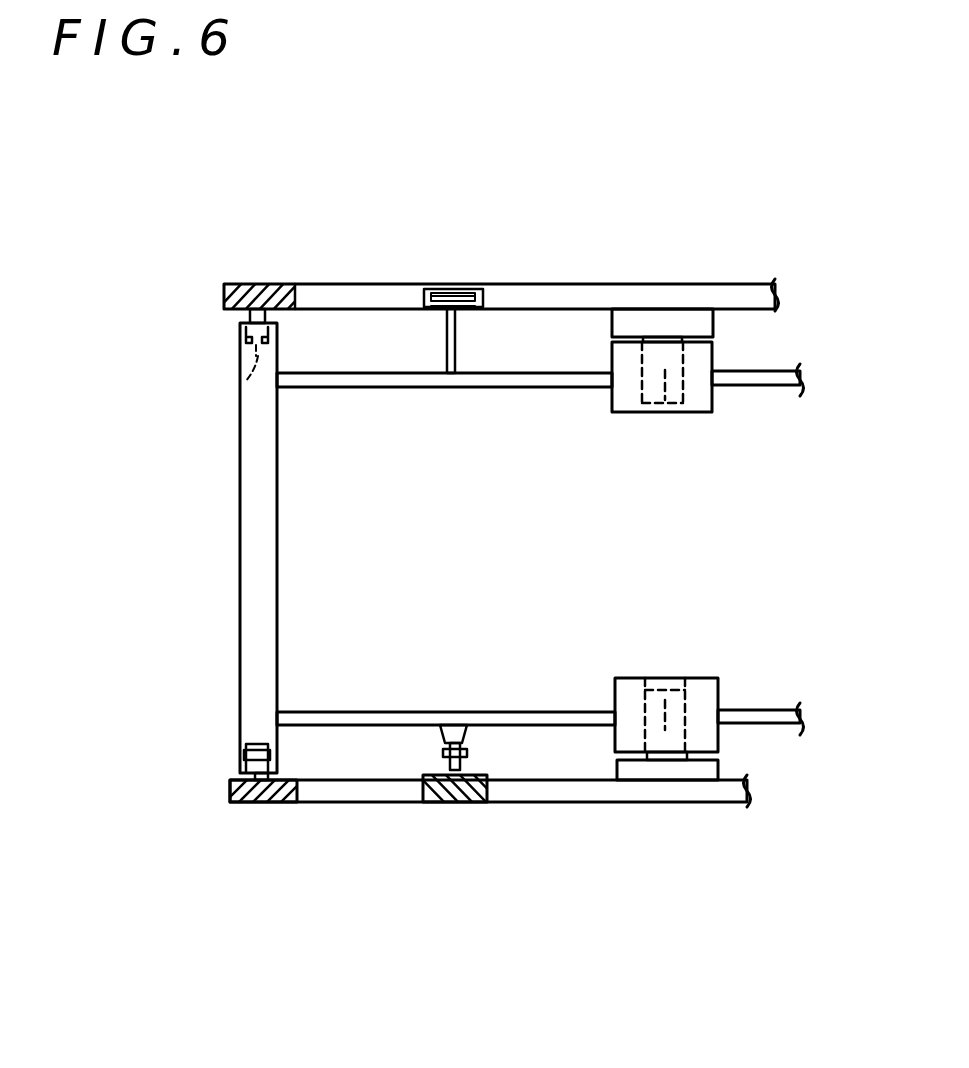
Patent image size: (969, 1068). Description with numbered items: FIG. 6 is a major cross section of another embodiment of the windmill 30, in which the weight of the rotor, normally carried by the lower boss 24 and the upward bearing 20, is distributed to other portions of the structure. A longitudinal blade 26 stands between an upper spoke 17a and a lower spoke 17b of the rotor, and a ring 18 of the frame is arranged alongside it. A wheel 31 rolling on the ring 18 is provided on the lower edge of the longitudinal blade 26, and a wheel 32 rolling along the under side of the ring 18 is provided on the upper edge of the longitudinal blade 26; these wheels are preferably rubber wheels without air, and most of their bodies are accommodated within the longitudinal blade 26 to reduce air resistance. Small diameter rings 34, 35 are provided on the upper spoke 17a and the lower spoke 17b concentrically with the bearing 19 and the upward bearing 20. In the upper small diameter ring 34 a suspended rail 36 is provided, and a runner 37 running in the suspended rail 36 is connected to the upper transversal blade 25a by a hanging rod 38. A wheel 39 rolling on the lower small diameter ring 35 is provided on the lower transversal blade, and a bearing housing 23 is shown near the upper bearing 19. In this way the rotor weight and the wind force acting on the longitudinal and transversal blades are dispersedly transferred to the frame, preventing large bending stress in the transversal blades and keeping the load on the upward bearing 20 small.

The upper spoke 17a is at (550, 286).
The lower base plate 17b is at (563, 793).
The ring 18 is at (258, 803).
The bearing 19 is at (665, 400).
The upward bearing 20 is at (665, 710).
The upper bearing 23 is at (703, 402).
The lower boss 24 is at (632, 690).
The upper transversal blade 25a is at (383, 382).
The longitudinal blade 26 is at (263, 538).
The windmill 30 is at (705, 248).
The wheel 31 is at (240, 750).
The wheel 32 is at (238, 378).
The small diameter ring 34 is at (430, 285).
The small diameter ring 35 is at (450, 803).
The suspended rail 36 is at (470, 287).
The runner 37 is at (430, 308).
The hanging rod 38 is at (462, 344).
The wheel 39 is at (462, 755).